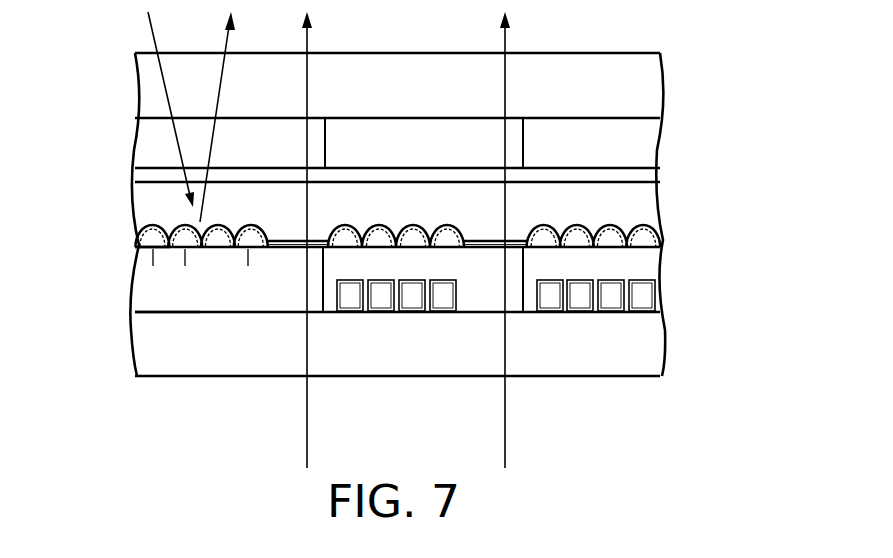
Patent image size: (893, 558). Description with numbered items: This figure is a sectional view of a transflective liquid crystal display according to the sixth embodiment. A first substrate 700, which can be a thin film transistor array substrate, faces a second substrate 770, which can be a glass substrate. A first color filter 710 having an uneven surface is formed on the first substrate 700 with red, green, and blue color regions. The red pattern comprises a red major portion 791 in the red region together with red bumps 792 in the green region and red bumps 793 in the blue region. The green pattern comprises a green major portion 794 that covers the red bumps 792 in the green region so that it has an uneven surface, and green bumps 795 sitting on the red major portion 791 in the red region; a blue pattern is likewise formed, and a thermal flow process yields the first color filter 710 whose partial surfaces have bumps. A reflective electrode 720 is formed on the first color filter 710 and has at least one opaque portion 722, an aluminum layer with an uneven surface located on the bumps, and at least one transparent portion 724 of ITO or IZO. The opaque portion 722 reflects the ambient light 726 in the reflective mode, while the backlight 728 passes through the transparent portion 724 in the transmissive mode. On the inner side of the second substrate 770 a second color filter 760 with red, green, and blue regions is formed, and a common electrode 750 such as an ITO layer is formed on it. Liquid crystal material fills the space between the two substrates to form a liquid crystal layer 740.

The first substrate 700 is at (642, 345).
The first color filter 710 is at (640, 268).
The reflective electrode 720 is at (396, 320).
The opaque portion 722 is at (217, 240).
The transparent portion 724 is at (276, 252).
The ambient light 726 is at (150, 33).
The backlight 728 is at (307, 455).
The liquid crystal layer 740 is at (655, 200).
The common electrode 750 is at (640, 176).
The second color filter 760 is at (642, 147).
The second substrate 770 is at (655, 82).
The red major portion 791 is at (143, 306).
The red bumps 792 is at (347, 312).
The red bumps 793 is at (546, 312).
The green major portion 794 is at (488, 295).
The green bumps 795 is at (138, 250).